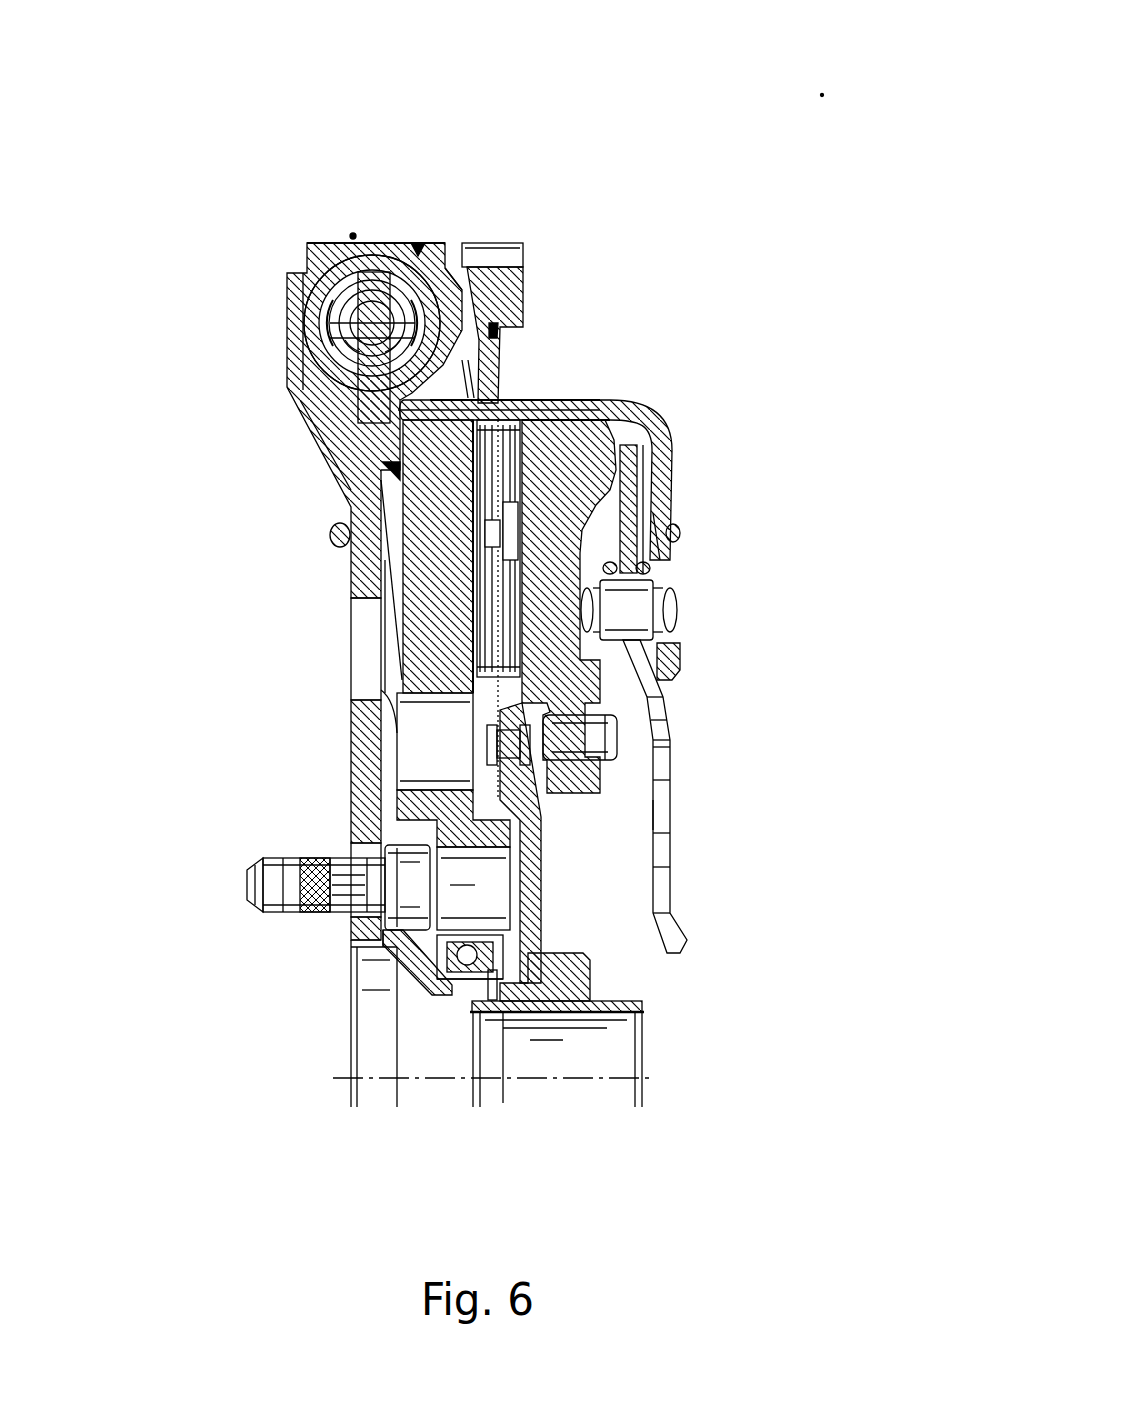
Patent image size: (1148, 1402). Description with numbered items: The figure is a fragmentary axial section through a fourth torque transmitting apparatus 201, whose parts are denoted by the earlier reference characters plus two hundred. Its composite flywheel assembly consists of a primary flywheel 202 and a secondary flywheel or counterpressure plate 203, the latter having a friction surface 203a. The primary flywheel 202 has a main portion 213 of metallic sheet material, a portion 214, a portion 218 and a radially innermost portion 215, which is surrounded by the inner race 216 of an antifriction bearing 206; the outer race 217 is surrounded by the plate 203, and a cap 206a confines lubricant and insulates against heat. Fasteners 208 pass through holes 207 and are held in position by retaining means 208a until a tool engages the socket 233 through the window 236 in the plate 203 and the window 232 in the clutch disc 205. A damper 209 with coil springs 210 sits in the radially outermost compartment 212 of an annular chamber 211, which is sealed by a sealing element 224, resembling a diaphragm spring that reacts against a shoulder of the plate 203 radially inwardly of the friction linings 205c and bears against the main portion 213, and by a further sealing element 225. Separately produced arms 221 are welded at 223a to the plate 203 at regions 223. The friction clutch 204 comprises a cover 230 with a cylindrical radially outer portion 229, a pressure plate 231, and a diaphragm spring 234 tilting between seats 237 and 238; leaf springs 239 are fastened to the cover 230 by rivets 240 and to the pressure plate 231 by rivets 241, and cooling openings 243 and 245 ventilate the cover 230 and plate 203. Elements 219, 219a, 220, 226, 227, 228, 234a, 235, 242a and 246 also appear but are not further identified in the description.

The torque transmitting apparatus 201 is at (228, 118).
The primary flywheel 202 is at (372, 822).
The secondary flywheel (counterpressure plate) 203 is at (422, 650).
The friction surface 203a is at (478, 662).
The friction clutch 204 is at (565, 452).
The clutch disc 205 is at (552, 815).
The friction linings 205c is at (478, 485).
The antifriction bearing 206 is at (445, 985).
The cap 206a is at (500, 1000).
The holes 207 is at (402, 922).
The fasteners 208 is at (402, 880).
The retaining means 208a is at (347, 868).
The damper 209 is at (353, 232).
The energy storing elements 210 is at (372, 272).
The annular chamber 211 is at (345, 430).
The radially outermost compartment 212 is at (343, 312).
The main portion 213 is at (372, 580).
The portion of primary flywheel 214 is at (358, 746).
The radially innermost portion 215 is at (468, 990).
The inner race 216 is at (368, 1000).
The outer race 217 is at (440, 963).
The portion of primary flywheel 218 is at (330, 242).
The ring 219 is at (442, 252).
The cover plate 219a is at (507, 400).
The marker 220 is at (418, 242).
The arms 221 is at (346, 340).
The regions 223 is at (310, 420).
The weld 223a is at (365, 470).
The sealing element 224 is at (385, 615).
The sealing element 225 is at (483, 408).
The block 226 is at (492, 262).
The indicator 227 is at (505, 333).
The pin 228 is at (500, 365).
The cylindrical radially outer portion 229 is at (603, 420).
The cover 230 is at (628, 475).
The pressure plate 231 is at (668, 468).
The window 232 is at (528, 908).
The socket 233 is at (268, 893).
The diaphragm spring 234 is at (672, 540).
The lever section 234a is at (665, 745).
The lever end 235 is at (667, 873).
The window 236 is at (490, 900).
The seat 237 is at (680, 578).
The seat 238 is at (672, 607).
The leaf springs 239 is at (665, 662).
The rivets 240 is at (645, 618).
The rivets 241 is at (582, 740).
The seal 242a is at (675, 532).
The cooling openings 243 is at (655, 440).
The cooling openings 245 is at (422, 776).
The cover plate 246 is at (520, 398).